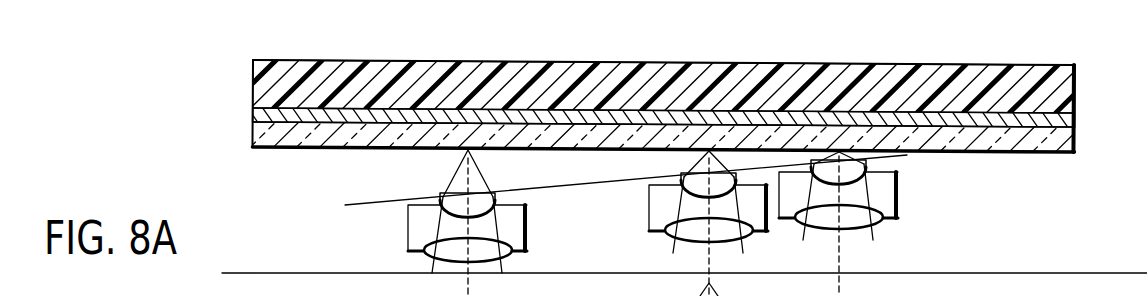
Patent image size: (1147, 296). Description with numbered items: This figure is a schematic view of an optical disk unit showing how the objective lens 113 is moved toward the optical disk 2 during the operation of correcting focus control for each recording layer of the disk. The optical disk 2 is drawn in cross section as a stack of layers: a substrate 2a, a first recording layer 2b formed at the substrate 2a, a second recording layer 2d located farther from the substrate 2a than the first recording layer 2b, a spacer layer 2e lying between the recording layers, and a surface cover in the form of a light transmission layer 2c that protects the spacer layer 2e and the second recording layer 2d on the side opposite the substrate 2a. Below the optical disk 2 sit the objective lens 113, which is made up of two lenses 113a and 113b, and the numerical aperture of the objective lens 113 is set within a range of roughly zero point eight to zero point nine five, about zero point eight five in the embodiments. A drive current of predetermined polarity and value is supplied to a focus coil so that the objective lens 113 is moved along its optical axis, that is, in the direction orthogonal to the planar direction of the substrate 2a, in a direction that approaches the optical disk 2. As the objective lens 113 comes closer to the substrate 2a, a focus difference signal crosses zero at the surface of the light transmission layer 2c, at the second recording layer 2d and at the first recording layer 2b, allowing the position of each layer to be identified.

The optical disk 2 is at (243, 148).
The substrate 2a is at (1076, 82).
The first recording layer 2b is at (857, 110).
The light transmission layer 2c is at (482, 147).
The second recording layer 2d is at (742, 125).
The spacer layer 2e is at (1076, 119).
The objective lens 113 is at (595, 192).
The first lens of the objective lens 113a is at (498, 198).
The second lens of the objective lens 113b is at (513, 252).